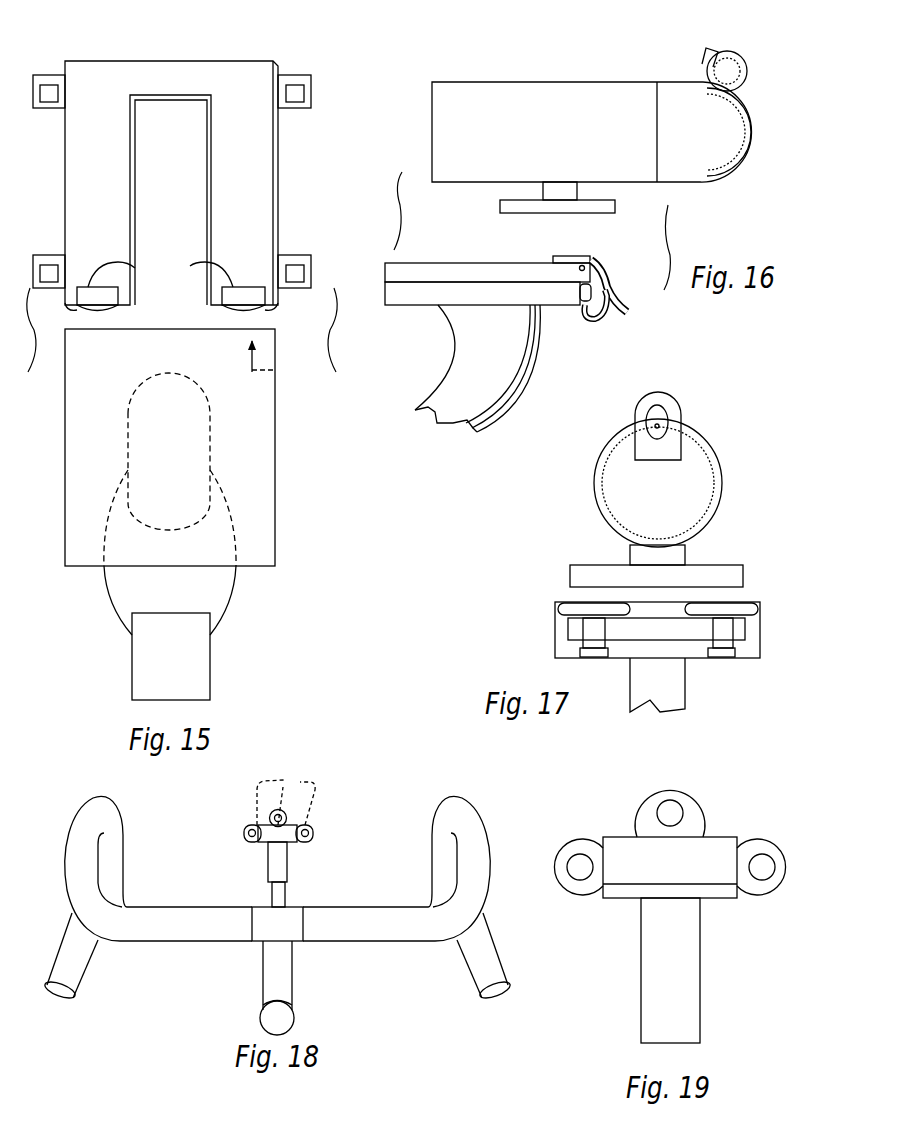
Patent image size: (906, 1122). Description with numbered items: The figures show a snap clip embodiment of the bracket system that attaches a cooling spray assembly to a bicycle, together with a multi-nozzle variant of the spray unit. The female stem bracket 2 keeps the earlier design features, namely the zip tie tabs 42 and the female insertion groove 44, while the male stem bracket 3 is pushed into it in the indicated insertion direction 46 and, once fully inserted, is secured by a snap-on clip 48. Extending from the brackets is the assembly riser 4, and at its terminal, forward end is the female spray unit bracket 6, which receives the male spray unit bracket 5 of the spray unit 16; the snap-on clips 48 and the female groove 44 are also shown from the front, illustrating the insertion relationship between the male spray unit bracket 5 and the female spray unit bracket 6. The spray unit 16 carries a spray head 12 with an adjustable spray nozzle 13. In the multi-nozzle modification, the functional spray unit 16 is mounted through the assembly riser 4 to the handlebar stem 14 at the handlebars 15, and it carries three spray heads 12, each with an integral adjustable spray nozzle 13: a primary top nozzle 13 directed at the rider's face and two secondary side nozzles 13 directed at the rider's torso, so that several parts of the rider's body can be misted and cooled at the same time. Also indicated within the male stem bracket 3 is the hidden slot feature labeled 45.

In FIG. 15, the female stem bracket 2 is at (221, 52).
In FIG. 15, the male stem bracket 3 is at (290, 473).
In FIG. 15, the assembly riser 4 is at (227, 593).
In FIG. 16, the assembly riser 4 is at (450, 335).
In FIG. 17, the assembly riser 4 is at (685, 695).
In FIG. 18, the assembly riser 4 is at (270, 896).
In FIG. 16, the male spray unit bracket 5 is at (500, 204).
In FIG. 17, the male spray unit bracket 5 is at (721, 568).
In FIG. 15, the female spray unit bracket 6 is at (197, 653).
In FIG. 16, the female spray unit bracket 6 is at (558, 305).
In FIG. 17, the female spray unit bracket 6 is at (555, 644).
In FIG. 17, the spray head 12 is at (679, 412).
In FIG. 18, the spray head 12 is at (286, 799).
In FIG. 19, the spray head 12 is at (702, 788).
In FIG. 18, the adjustable spray nozzle 13 is at (244, 831).
In FIG. 19, the adjustable spray nozzle 13 is at (660, 803).
In FIG. 18, the handlebar stem 14 is at (291, 978).
In FIG. 18, the handlebars 15 is at (351, 930).
In FIG. 16, the spray unit 16 is at (501, 84).
In FIG. 17, the spray unit 16 is at (612, 476).
In FIG. 18, the spray unit 16 is at (288, 860).
In FIG. 19, the spray unit 16 is at (690, 960).
In FIG. 15, the zip tie tabs 42 is at (50, 108).
In FIG. 15, the female insertion groove 44 is at (216, 303).
In FIG. 16, the female insertion groove 44 is at (425, 272).
In FIG. 17, the female insertion groove 44 is at (673, 625).
In FIG. 15, the slot 45 is at (210, 400).
In FIG. 15, the direction of male stem bracket insertion 46 is at (275, 370).
In FIG. 16, the direction of male stem bracket insertion 46 is at (540, 245).
In FIG. 15, the snap-on clip 48 is at (136, 267).
In FIG. 16, the snap-on clip 48 is at (609, 282).
In FIG. 17, the snap-on clip 48 is at (573, 628).